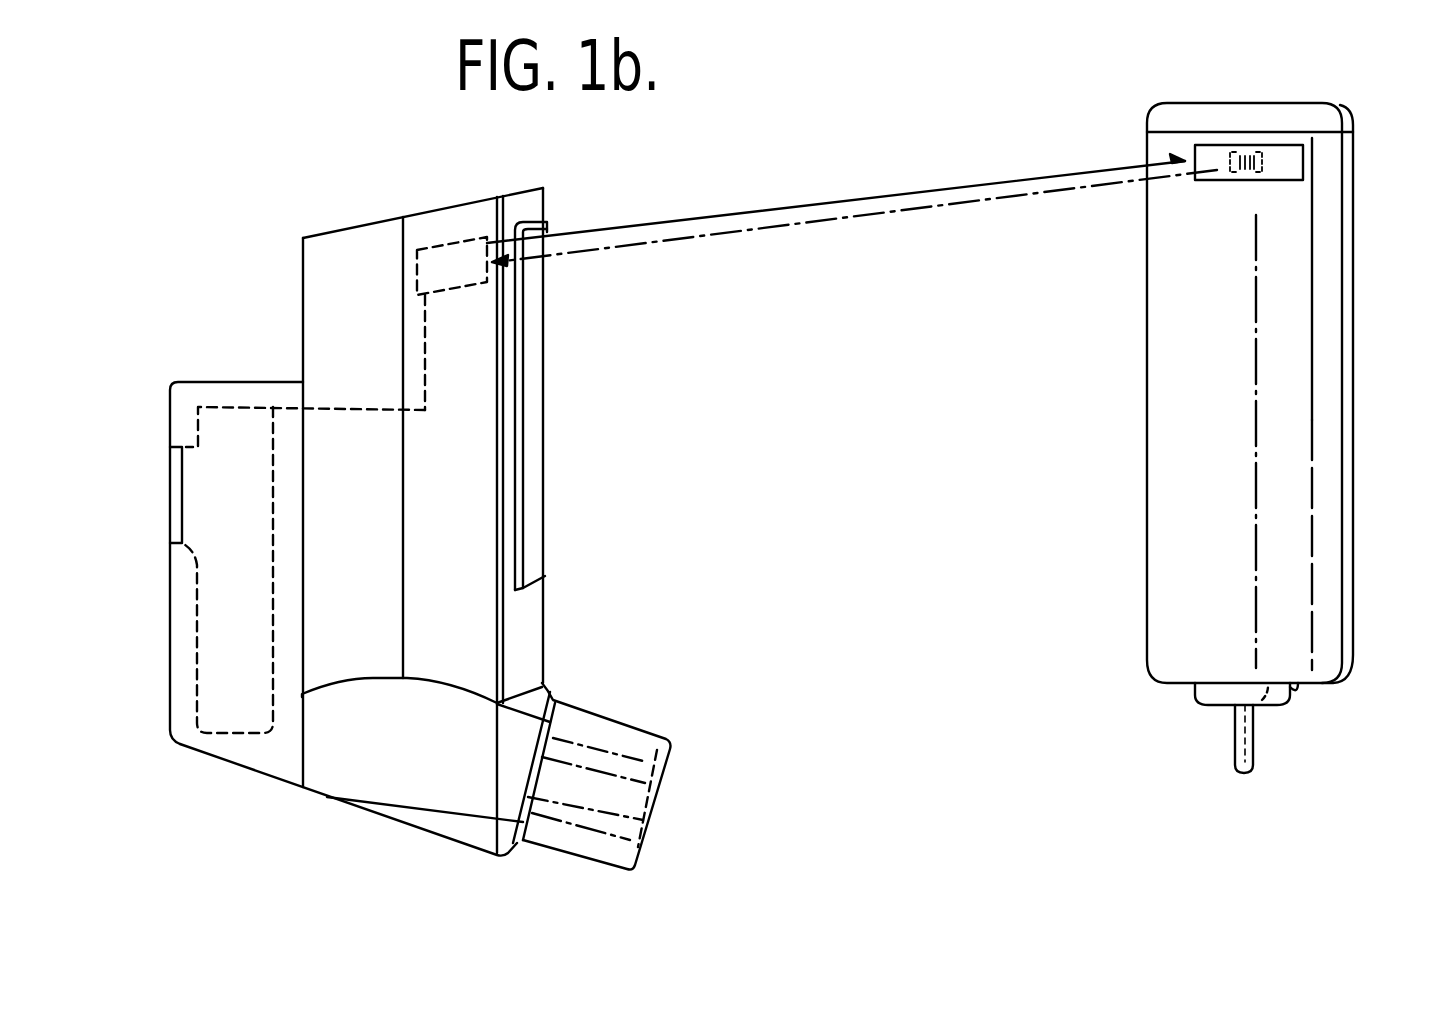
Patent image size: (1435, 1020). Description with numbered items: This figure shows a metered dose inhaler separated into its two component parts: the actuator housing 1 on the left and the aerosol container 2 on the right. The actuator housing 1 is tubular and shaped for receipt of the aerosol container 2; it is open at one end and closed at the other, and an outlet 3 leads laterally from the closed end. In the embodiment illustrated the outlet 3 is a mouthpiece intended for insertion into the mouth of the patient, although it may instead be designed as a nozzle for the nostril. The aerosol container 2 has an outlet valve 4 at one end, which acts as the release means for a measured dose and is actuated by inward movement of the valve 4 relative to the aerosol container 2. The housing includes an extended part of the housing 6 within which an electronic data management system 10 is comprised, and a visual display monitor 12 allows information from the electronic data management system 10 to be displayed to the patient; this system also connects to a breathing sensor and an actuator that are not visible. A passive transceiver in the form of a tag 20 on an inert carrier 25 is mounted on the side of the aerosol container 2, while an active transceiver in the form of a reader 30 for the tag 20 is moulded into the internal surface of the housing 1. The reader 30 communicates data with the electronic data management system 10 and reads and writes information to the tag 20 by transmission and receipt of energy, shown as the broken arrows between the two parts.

The tubular actuator housing 1 is at (371, 333).
The aerosol container 2 is at (1332, 440).
The outlet 3 is at (633, 810).
The outlet valve 4 is at (1250, 752).
The extended part of the housing 6 is at (252, 772).
The electronic data management system 10 is at (228, 605).
The visual display monitor 12 is at (170, 500).
The tag 20 is at (1272, 165).
The inert carrier 25 is at (1292, 170).
The reader 30 is at (447, 258).